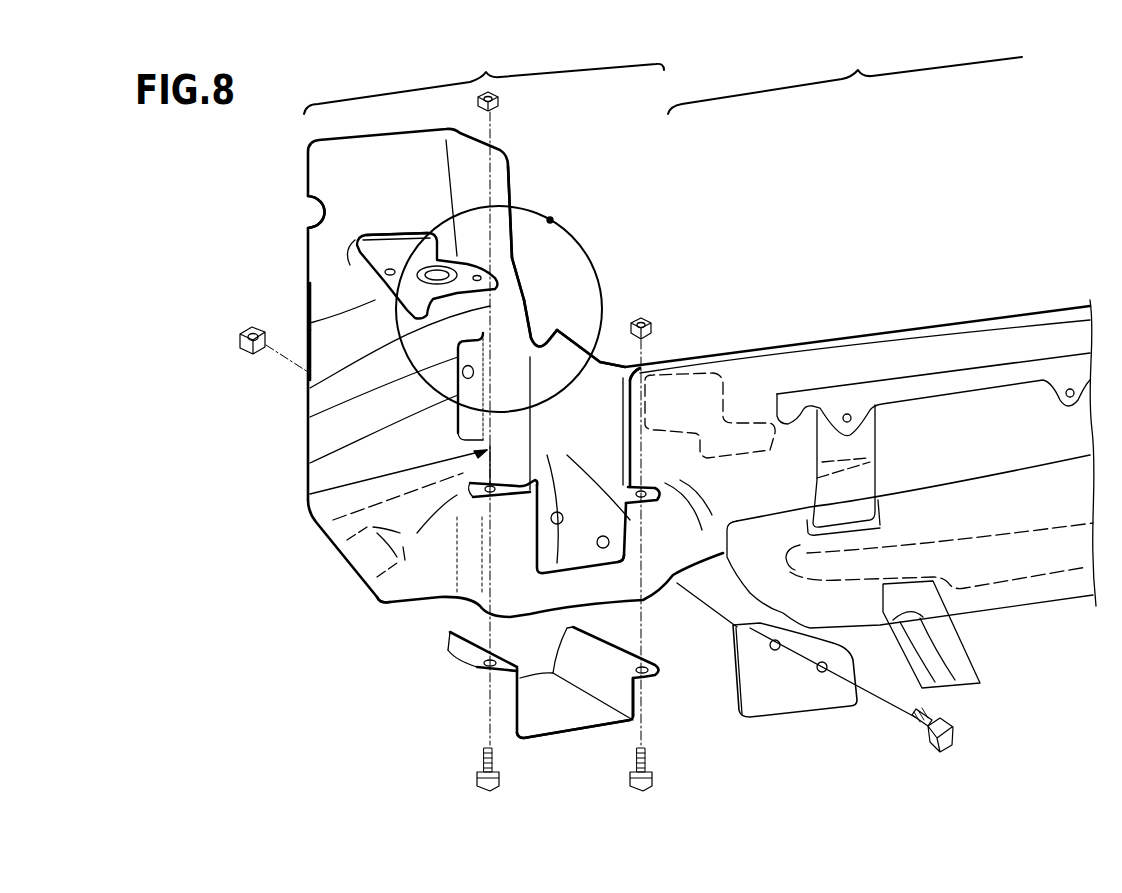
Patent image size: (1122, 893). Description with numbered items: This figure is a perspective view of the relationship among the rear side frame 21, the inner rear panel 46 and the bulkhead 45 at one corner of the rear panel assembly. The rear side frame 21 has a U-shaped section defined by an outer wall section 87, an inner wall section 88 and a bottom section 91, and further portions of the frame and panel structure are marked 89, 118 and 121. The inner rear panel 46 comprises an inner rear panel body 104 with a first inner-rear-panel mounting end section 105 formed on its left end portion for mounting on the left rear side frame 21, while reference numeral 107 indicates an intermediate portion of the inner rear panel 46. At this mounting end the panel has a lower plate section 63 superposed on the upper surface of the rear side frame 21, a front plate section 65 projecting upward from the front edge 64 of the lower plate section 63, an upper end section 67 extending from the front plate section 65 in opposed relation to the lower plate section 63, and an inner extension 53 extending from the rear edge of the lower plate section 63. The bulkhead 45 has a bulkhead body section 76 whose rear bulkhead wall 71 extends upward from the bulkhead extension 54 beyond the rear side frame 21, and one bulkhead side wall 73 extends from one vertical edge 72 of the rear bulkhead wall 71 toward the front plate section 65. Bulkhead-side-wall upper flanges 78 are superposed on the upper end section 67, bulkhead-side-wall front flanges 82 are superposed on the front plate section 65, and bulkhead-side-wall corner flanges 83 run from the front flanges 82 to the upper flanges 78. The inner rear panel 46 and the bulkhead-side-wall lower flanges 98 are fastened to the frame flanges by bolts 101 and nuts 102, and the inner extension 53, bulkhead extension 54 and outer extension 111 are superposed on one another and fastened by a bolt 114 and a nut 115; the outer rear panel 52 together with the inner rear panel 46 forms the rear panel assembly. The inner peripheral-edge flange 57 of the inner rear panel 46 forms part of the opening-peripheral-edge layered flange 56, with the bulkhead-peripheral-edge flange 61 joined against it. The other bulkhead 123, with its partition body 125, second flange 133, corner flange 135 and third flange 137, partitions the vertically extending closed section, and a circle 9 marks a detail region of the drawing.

The enlarged view circle (FIG. 9 region) 9 is at (550, 220).
The rear side frame 21 is at (455, 720).
The bulkhead 45 is at (652, 450).
The inner rear panel 46 is at (308, 168).
The outer rear panel 52 is at (870, 652).
The inner extension 53 is at (593, 583).
The bulkhead extension 54 is at (483, 492).
The opening-peripheral-edge layered flange 56 is at (790, 350).
The inner peripheral-edge flange 57 is at (565, 318).
The bulkhead-peripheral-edge flange 61 is at (596, 322).
The lower plate section 63 is at (382, 605).
The front edge 64 is at (393, 507).
The front plate section 65 is at (308, 323).
The upper end section 67 is at (658, 370).
The rear bulkhead wall 71 is at (645, 568).
The center plate 72 is at (585, 540).
The bulkhead side wall 73 is at (310, 464).
The bulkhead body section 76 is at (310, 495).
The bulkhead-side-wall upper flange 78 is at (521, 312).
The bulkhead-side-wall front flange 82 is at (310, 418).
The bulkhead-side-wall corner flange 83 is at (310, 388).
The outer wall section 87 is at (473, 663).
The inner wall section 88 is at (642, 697).
The step portion 89 is at (475, 678).
The bottom section 91 is at (570, 739).
The bulkhead-side-wall lower flange 98 is at (462, 497).
The bolt 101 is at (477, 781).
The nut 102 is at (500, 106).
The inner rear panel body 104 is at (1020, 312).
The first inner-rear-panel mounting end section 105 is at (484, 81).
The intermediate portion 107 is at (845, 80).
The outer extension 111 is at (828, 707).
The bolt 114 is at (953, 737).
The nut 115 is at (238, 341).
The inner wall 118 is at (627, 370).
The upper edge portion 121 is at (517, 250).
The other bulkhead 123 is at (393, 236).
The partition body 125 is at (398, 300).
The second flange 133 is at (312, 300).
The corner flange 135 is at (533, 248).
The third flange 137 is at (355, 243).